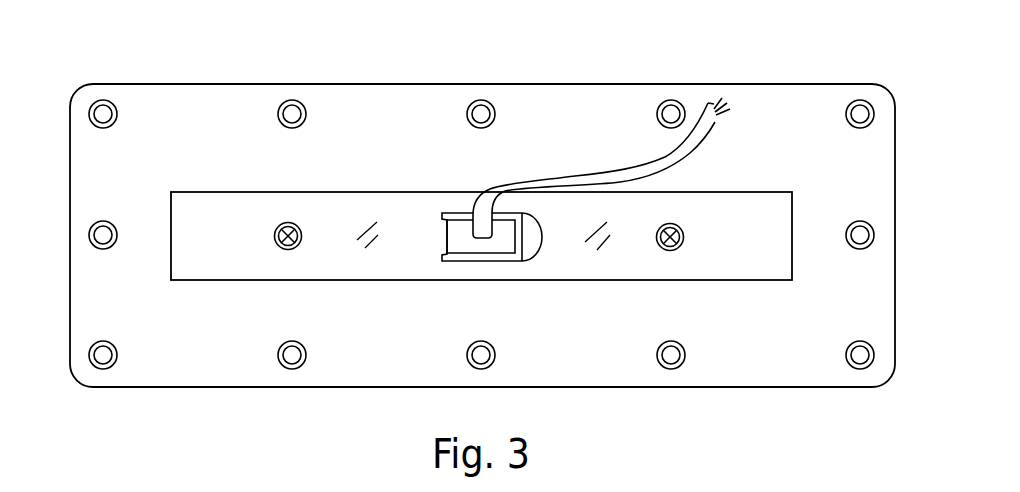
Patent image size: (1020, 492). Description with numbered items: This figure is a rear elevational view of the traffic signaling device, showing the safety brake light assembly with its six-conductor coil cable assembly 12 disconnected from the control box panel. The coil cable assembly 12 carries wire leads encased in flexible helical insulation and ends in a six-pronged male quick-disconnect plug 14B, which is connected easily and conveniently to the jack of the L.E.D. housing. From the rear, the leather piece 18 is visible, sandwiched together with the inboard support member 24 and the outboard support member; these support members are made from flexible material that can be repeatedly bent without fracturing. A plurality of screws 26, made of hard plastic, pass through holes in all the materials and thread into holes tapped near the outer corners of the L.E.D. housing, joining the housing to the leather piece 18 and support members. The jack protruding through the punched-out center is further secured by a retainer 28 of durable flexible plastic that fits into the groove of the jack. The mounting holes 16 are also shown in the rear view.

The coil cable assembly 12 is at (717, 117).
The six-pronged male quick-disconnect plug 14B is at (460, 237).
The mounting holes 16 is at (674, 110).
The leather piece 18 is at (380, 107).
The inboard support member 24 is at (212, 240).
The screws 26 is at (283, 226).
The retainer 28 is at (530, 243).